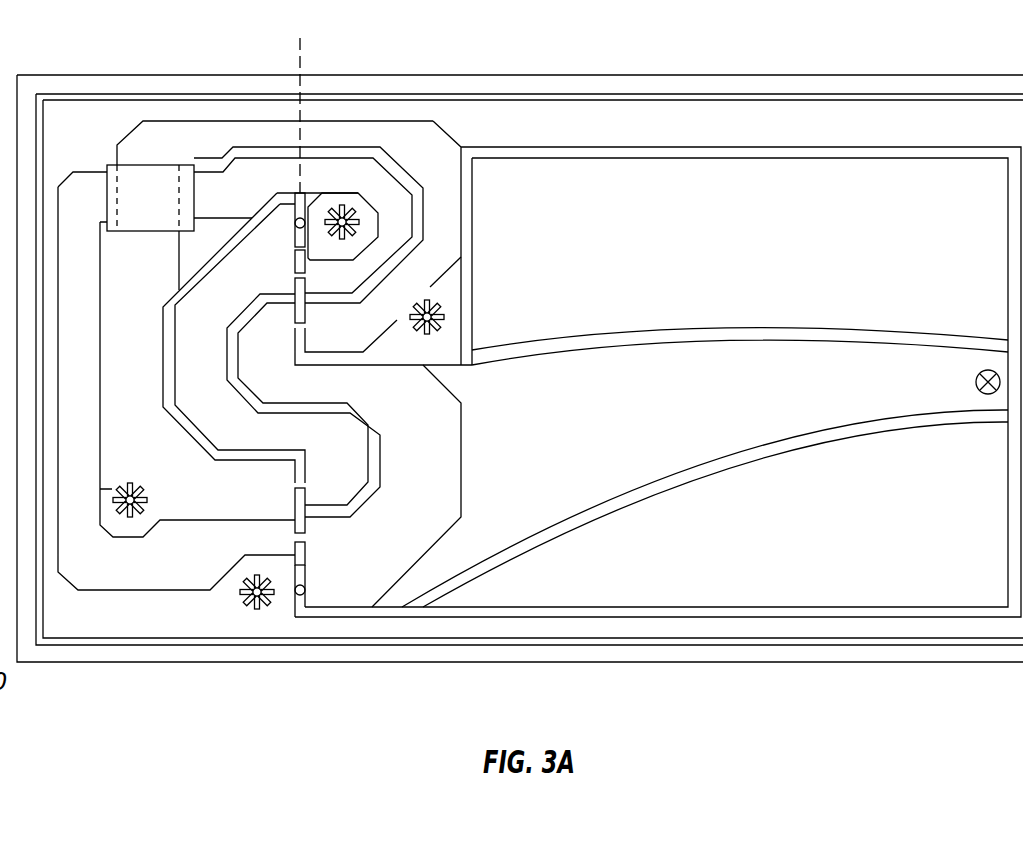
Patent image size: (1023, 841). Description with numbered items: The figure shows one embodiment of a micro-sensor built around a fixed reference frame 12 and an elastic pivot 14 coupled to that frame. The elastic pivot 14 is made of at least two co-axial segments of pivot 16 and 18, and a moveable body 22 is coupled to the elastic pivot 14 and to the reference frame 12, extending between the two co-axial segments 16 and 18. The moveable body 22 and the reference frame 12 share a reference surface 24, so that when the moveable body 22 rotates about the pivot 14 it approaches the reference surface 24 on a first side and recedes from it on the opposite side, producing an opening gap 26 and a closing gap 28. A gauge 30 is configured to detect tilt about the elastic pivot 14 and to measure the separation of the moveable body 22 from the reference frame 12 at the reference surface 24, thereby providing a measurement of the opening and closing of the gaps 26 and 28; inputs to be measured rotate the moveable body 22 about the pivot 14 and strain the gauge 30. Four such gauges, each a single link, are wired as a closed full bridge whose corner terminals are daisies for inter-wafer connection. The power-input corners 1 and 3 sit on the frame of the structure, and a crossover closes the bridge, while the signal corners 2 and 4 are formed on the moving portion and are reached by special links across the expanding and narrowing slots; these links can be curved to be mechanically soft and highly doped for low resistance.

The power-input corner 1 is at (430, 317).
The signal corner 2 is at (370, 203).
The power-input corner 3 is at (132, 500).
The signal corner 4 is at (256, 593).
The fixed reference frame 12 is at (772, 94).
The elastic pivot 14 is at (300, 58).
The co-axial segment of pivot 16 is at (301, 578).
The co-axial segment of pivot 18 is at (306, 221).
The moveable body 22 is at (597, 444).
The reference surface 24 is at (145, 592).
The opening gap 26 is at (301, 512).
The closing gap 28 is at (301, 301).
The gauge 30 is at (288, 325).